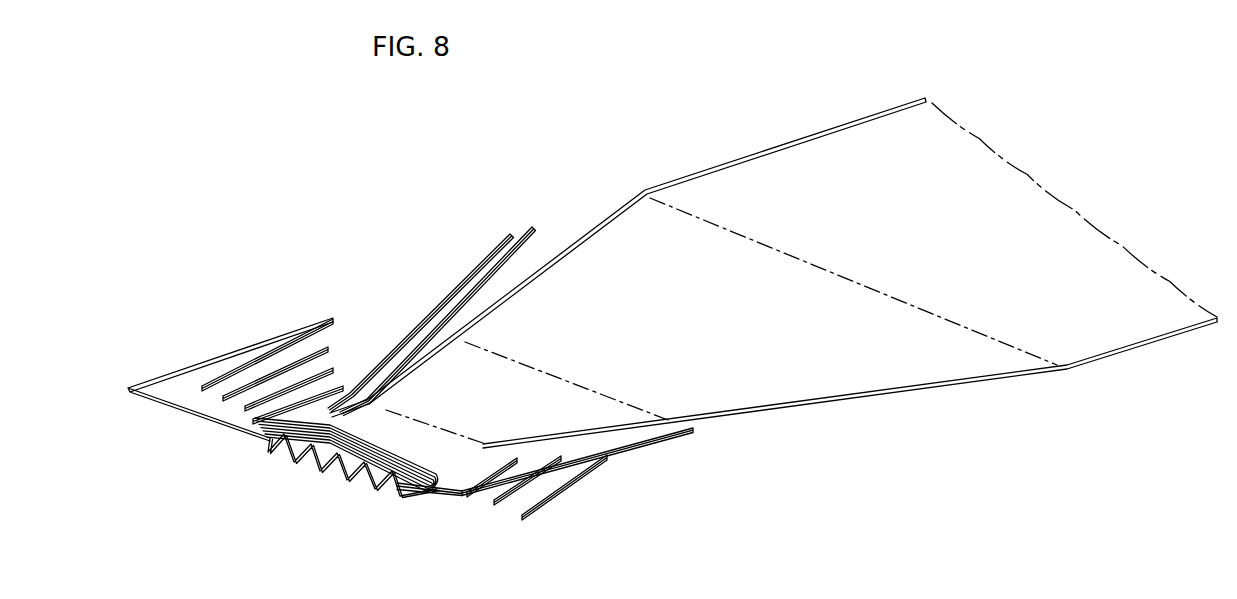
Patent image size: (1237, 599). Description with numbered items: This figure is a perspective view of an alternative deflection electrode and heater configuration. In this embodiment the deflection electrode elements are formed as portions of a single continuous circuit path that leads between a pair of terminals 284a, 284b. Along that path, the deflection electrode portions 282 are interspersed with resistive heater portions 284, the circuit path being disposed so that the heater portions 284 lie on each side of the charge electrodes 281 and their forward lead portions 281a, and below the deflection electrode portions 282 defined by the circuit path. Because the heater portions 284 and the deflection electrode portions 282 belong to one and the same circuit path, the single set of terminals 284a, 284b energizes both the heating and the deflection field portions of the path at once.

The charge electrodes 281 is at (350, 413).
The forward lead portions 281a is at (430, 368).
The deflection electrode portions 282 is at (392, 497).
The resistive heater portions 284 is at (253, 362).
The terminal 284a is at (509, 234).
The terminal 284b is at (535, 228).